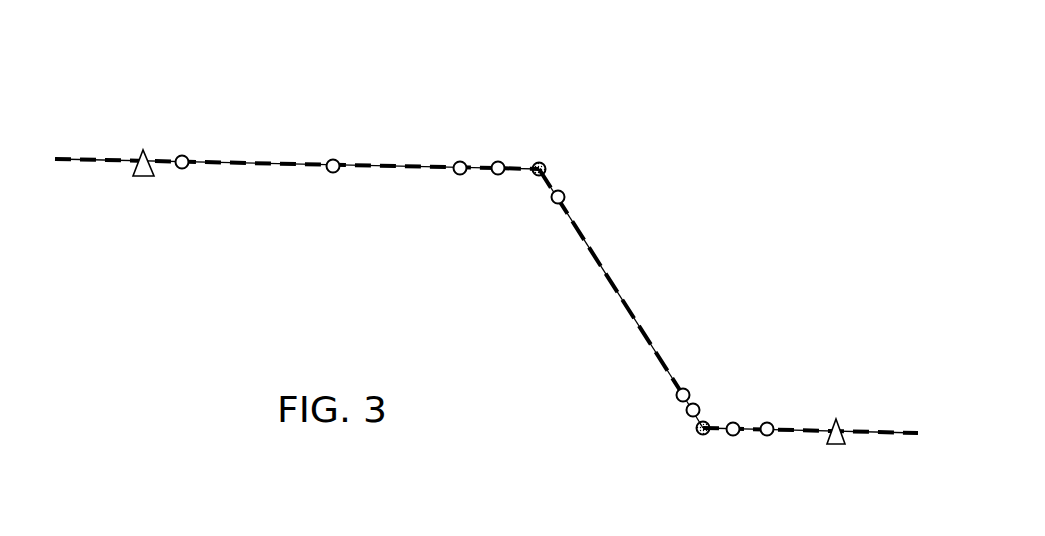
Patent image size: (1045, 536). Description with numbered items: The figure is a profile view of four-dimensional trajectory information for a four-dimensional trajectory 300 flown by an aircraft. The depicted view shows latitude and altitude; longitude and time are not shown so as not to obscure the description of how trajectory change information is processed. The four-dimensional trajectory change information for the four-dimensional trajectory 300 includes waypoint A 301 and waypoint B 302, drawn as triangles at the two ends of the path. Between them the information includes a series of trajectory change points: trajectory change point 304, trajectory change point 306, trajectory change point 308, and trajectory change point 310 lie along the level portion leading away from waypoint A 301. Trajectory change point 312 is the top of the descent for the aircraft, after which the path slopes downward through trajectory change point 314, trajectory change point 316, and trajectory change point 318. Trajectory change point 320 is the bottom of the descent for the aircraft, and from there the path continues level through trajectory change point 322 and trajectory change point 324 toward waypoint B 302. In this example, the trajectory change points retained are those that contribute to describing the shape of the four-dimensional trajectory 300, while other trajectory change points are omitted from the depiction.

The four-dimensional trajectory 300 is at (584, 80).
The waypoint A 301 is at (140, 151).
The waypoint B 302 is at (838, 419).
The trajectory change point 304 is at (181, 155).
The trajectory change point 306 is at (332, 159).
The trajectory change point 308 is at (459, 161).
The trajectory change point 310 is at (499, 161).
The trajectory change point 312 is at (535, 177).
The trajectory change point 314 is at (565, 197).
The trajectory change point 316 is at (676, 395).
The trajectory change point 318 is at (699, 405).
The trajectory change point 320 is at (707, 435).
The trajectory change point 322 is at (738, 423).
The trajectory change point 324 is at (768, 437).